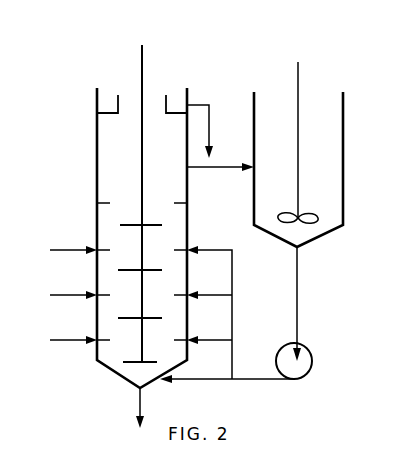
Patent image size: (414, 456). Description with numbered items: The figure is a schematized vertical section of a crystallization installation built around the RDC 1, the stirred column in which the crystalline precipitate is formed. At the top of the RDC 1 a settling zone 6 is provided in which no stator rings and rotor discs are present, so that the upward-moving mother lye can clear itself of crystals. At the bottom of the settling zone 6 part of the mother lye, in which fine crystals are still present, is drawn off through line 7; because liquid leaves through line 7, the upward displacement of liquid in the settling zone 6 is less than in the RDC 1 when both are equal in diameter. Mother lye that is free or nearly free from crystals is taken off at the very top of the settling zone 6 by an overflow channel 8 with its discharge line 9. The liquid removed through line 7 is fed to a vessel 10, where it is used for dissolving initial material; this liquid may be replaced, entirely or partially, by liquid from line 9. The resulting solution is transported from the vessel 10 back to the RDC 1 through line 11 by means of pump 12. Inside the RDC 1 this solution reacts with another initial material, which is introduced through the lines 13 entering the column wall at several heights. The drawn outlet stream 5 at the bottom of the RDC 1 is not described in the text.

The RDC 1 is at (142, 238).
The product outlet stream 5 is at (147, 408).
The settling zone 6 is at (141, 203).
The line 7 is at (220, 158).
The overflow channel 8 is at (142, 93).
The discharge line 9 is at (205, 129).
The vessel 10 is at (298, 154).
The line 11 is at (307, 304).
The pump 12 is at (249, 314).
The lines 13 is at (59, 296).